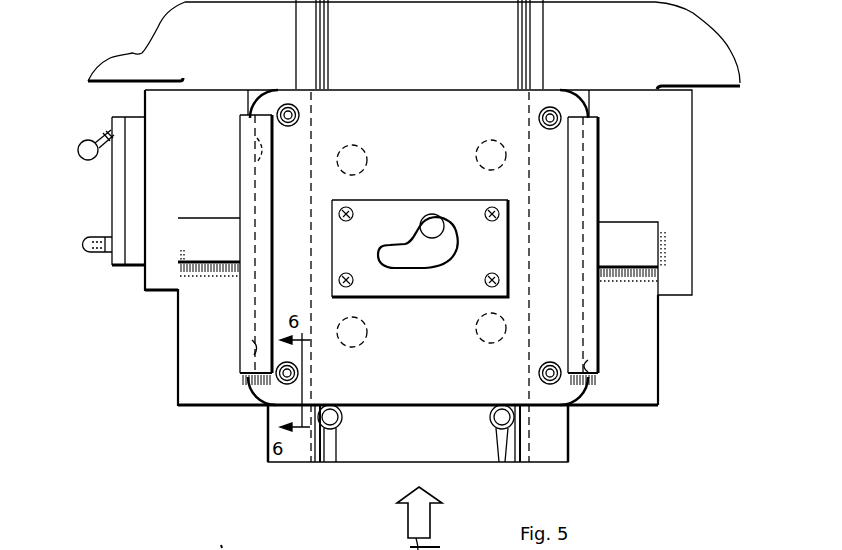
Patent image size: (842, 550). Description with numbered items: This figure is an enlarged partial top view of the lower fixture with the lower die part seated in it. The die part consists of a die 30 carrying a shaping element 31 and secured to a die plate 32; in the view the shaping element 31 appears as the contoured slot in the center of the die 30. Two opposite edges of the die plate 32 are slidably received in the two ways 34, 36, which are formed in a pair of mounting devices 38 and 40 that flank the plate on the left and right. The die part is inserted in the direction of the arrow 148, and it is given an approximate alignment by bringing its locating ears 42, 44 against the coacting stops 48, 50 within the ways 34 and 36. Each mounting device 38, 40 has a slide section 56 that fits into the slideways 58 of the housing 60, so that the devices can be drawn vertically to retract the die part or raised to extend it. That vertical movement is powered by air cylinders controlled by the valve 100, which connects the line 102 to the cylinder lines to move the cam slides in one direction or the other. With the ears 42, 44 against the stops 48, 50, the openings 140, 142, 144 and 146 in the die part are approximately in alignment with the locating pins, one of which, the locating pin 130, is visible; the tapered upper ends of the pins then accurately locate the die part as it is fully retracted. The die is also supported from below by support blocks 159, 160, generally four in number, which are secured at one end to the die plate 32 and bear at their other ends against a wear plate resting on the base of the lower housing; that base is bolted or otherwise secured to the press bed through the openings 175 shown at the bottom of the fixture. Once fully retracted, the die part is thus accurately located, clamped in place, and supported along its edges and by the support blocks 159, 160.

The die 30 is at (408, 220).
The shaping element 31 is at (437, 215).
The die plate 32 is at (407, 108).
The way 34 is at (258, 145).
The way 36 is at (606, 190).
The mounting device 38 is at (272, 216).
The mounting device 40 is at (597, 163).
The locating ear 42 is at (242, 378).
The locating ear 44 is at (590, 391).
The stop 48 is at (250, 344).
The stop 50 is at (592, 365).
The slide section 56 is at (186, 265).
The slideway 58 is at (187, 247).
The housing 60 is at (178, 394).
The valve 100 is at (113, 190).
The line 102 is at (84, 238).
The locating pin 130 is at (305, 373).
The opening 140 is at (280, 386).
The opening 142 is at (562, 390).
The opening 144 is at (562, 98).
The opening 146 is at (284, 104).
The arrow 148 is at (295, 540).
The support block 159 is at (362, 340).
The support block 160 is at (482, 337).
The opening 175 is at (418, 446).